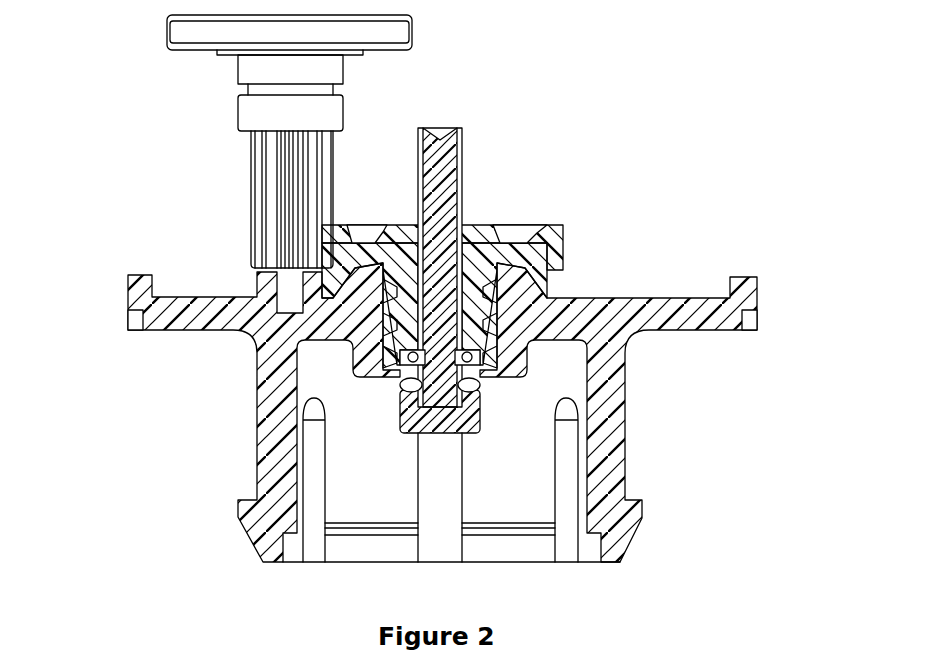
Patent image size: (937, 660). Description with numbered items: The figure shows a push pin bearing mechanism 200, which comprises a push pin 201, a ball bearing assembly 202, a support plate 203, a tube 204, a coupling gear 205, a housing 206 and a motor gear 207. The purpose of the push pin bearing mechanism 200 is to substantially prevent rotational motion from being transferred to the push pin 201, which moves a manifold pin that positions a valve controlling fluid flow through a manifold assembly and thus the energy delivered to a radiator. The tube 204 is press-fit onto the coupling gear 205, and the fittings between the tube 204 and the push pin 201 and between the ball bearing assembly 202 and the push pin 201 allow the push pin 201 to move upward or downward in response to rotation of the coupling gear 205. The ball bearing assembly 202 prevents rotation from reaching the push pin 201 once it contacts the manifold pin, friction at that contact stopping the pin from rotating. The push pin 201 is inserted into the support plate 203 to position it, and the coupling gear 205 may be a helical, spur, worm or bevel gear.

The push pin bearing mechanism 200 is at (556, 58).
The push pin 201 is at (486, 423).
The ball bearing assembly 202 is at (486, 386).
The support plate 203 is at (478, 347).
The tube 204 is at (467, 180).
The coupling gear 205 is at (393, 303).
The housing 206 is at (255, 436).
The motor gear 207 is at (284, 192).